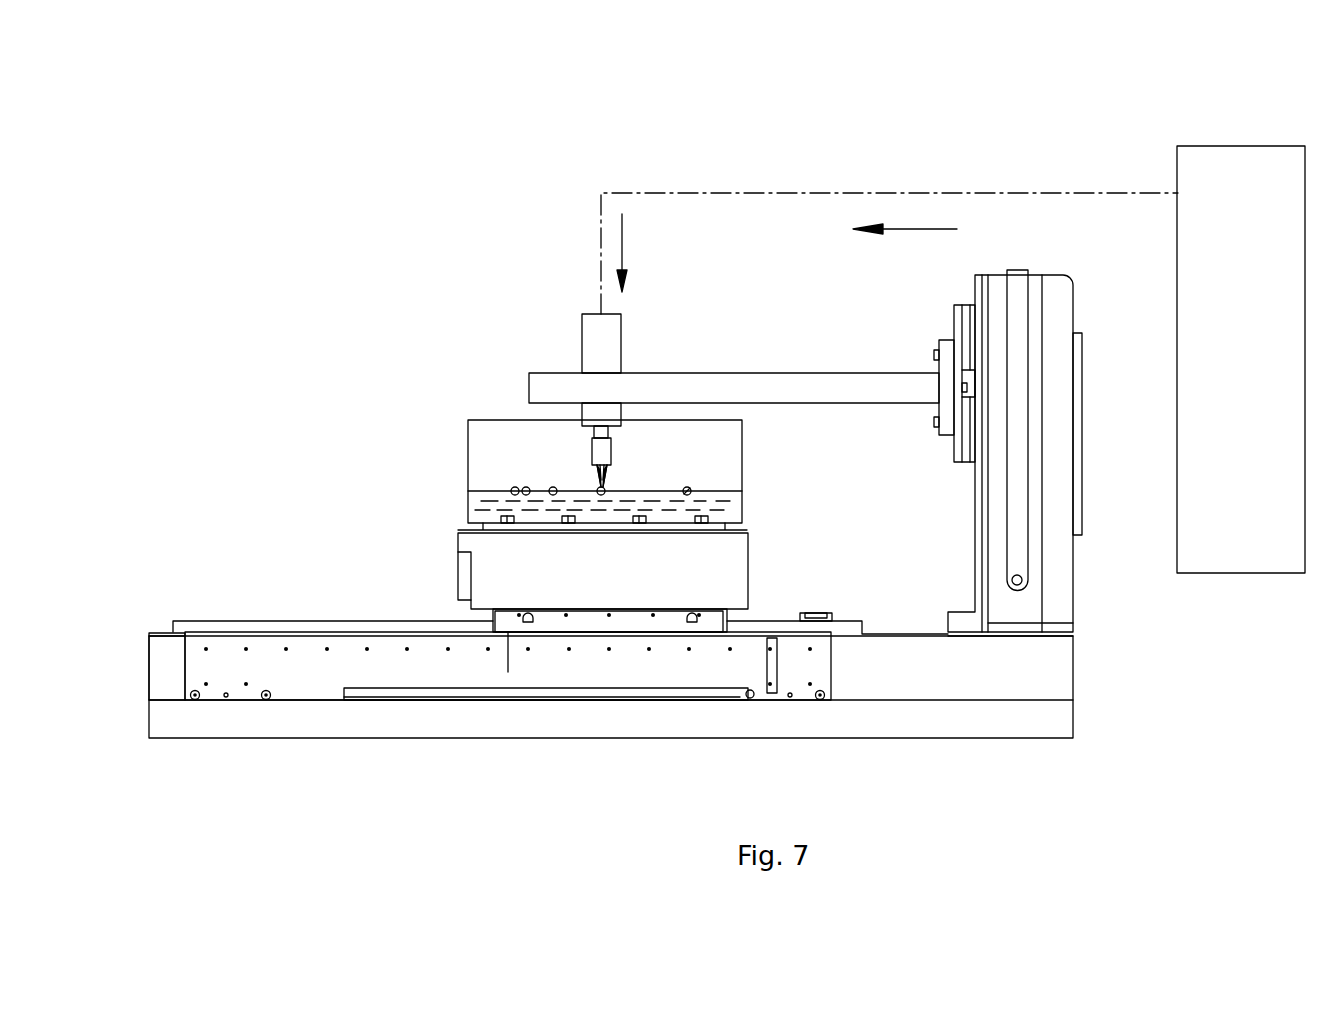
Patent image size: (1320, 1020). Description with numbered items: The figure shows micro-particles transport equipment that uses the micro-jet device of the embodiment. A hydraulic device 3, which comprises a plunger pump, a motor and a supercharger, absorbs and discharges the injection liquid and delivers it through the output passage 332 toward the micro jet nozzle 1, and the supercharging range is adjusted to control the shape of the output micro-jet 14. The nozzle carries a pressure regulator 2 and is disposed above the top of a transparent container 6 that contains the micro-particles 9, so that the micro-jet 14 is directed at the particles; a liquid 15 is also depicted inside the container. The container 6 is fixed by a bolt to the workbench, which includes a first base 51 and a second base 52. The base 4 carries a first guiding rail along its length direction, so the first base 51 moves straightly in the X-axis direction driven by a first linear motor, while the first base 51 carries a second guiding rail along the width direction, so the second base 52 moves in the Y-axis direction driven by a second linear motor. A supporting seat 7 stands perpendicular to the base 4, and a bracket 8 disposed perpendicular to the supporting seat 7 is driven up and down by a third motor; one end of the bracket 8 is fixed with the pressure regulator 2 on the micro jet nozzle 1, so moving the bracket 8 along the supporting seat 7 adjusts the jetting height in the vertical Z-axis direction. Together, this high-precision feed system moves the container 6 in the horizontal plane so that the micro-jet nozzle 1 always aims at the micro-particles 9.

The micro jet nozzle 1 is at (600, 452).
The pressure regulator 2 is at (598, 333).
The hydraulic device 3 is at (1258, 550).
The base 4 is at (490, 722).
The transparent container 6 is at (498, 430).
The supporting seat 7 is at (1055, 382).
The bracket 8 is at (748, 385).
The micro-particles 9 is at (690, 487).
The micro-jet 14 is at (607, 483).
The liquid 15 is at (478, 508).
The first base 51 is at (295, 668).
The second base 52 is at (483, 577).
The output passage 332 is at (977, 193).